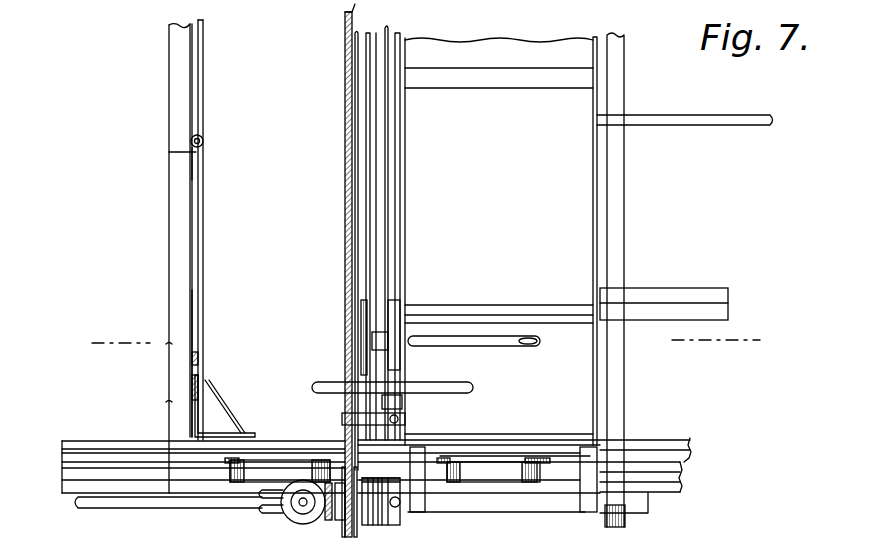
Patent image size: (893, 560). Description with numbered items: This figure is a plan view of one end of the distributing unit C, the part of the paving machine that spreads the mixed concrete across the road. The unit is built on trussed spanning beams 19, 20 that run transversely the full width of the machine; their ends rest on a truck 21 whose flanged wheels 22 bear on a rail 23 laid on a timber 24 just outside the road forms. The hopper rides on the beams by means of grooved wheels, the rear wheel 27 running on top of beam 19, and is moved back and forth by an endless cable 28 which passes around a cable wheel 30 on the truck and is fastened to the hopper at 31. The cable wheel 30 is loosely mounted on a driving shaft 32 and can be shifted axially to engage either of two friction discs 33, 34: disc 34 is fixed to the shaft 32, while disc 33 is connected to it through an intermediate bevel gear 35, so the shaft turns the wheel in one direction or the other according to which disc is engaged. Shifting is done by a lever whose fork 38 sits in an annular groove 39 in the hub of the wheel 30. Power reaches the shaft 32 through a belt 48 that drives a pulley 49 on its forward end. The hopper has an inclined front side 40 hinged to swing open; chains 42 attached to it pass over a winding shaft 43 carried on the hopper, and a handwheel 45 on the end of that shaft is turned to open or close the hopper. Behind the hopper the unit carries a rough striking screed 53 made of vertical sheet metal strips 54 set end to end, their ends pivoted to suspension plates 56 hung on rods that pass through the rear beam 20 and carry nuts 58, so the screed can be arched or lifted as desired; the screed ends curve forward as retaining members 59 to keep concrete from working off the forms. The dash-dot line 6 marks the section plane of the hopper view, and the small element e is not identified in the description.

The trussed spanning beam 19 is at (372, 258).
The rear trussed spanning beam 20 is at (171, 314).
The truck 21 is at (560, 457).
The flanged wheel 22 is at (497, 473).
The rail 23 is at (655, 473).
The timber 24 is at (676, 459).
The rear grooved wheel 27 is at (346, 251).
The endless cable 28 is at (344, 256).
The cable wheel 30 is at (343, 532).
The cable fastening 31 is at (343, 420).
The driving shaft 32 is at (246, 499).
The friction disc 33 is at (327, 519).
The friction disc 34 is at (388, 526).
The bevel gear 35 is at (300, 521).
The fork 38 is at (372, 526).
The annular groove 39 is at (372, 490).
The inclined front side 40 is at (578, 203).
The chain 42 is at (423, 307).
The winding shaft 43 is at (423, 241).
The handwheel 45 is at (450, 391).
The belt 48 is at (625, 393).
The pulley 49 is at (627, 521).
The rough striking screed 53 is at (214, 313).
The sheet metal strip 54 is at (205, 104).
The suspension plate 56 is at (198, 165).
The nut 58 is at (192, 138).
The retaining member 59 is at (228, 432).
The section line 6 is at (424, 342).
The pin e is at (399, 506).
The distributing unit C is at (396, 174).